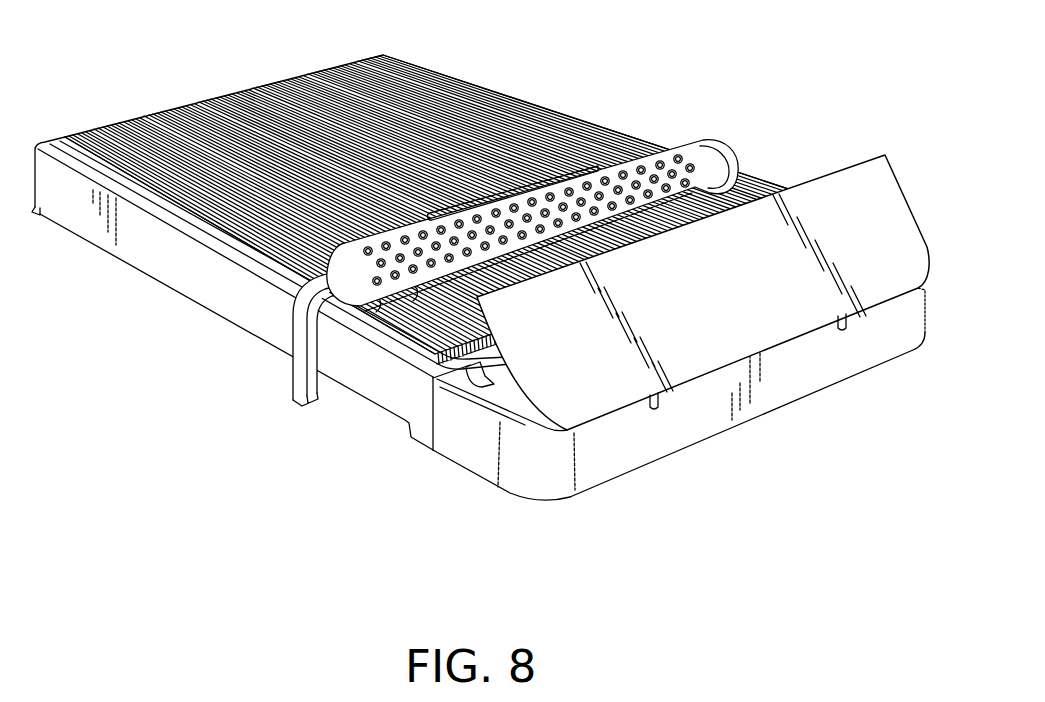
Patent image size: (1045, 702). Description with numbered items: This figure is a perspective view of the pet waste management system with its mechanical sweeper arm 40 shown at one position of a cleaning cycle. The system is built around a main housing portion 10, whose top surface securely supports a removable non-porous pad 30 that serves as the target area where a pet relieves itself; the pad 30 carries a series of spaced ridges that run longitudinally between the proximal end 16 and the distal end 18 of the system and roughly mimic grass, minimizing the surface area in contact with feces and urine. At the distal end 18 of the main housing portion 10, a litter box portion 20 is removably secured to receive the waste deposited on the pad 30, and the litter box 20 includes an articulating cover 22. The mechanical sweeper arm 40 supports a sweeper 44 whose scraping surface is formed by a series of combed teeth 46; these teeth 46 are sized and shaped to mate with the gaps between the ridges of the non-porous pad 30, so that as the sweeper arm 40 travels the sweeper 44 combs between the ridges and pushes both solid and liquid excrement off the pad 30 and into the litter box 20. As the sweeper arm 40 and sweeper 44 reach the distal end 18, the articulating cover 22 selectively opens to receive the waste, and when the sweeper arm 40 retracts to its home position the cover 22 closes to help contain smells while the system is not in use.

The main housing portion 10 is at (136, 247).
The proximal end 16 is at (226, 71).
The distal end 18 is at (768, 468).
The litter box portion 20 is at (607, 455).
The articulating cover 22 is at (897, 222).
The non-porous pad 30 is at (483, 107).
The mechanical sweeper arm 40 is at (300, 327).
The sweeper 44 is at (721, 160).
The combed teeth 46 is at (410, 290).